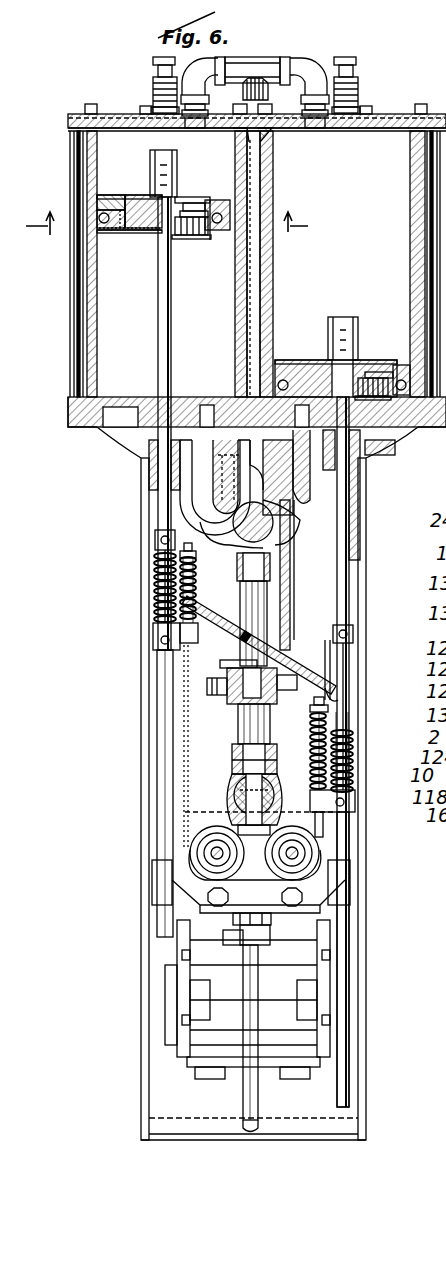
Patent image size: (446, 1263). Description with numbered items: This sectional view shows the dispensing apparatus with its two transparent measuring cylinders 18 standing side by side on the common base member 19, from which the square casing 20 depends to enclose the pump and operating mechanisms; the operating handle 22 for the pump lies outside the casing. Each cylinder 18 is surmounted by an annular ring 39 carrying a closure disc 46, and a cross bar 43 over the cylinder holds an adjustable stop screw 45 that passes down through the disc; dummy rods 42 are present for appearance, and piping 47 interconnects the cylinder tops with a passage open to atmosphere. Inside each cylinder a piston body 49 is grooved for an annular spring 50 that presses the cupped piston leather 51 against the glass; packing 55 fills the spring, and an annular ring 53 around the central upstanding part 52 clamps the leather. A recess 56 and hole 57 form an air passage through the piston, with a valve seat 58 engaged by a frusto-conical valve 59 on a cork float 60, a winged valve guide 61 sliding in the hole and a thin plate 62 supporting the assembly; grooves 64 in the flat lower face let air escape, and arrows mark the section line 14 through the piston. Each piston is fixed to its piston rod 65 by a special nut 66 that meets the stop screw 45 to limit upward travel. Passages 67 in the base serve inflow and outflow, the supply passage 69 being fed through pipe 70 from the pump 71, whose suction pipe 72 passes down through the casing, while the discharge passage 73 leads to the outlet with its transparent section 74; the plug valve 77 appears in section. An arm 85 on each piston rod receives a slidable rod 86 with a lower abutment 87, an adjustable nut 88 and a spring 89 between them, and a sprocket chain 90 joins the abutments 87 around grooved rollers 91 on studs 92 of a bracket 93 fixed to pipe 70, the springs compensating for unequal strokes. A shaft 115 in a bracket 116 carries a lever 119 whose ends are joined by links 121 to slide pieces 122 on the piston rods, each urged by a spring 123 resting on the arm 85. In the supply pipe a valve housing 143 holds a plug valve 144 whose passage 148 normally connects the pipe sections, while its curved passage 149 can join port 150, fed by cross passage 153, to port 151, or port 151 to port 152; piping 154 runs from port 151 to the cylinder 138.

The section line 14 is at (175, 227).
The measuring cylinder 18 is at (274, 188).
The base member 19 is at (80, 428).
The casing 20 is at (141, 740).
The operating handle 22 is at (330, 1013).
The annular ring 39 is at (76, 116).
The dummy rods 42 is at (77, 290).
The cross bar 43 is at (152, 93).
The stop screw 45 is at (156, 72).
The closure disc 46 is at (122, 116).
The piping 47 is at (300, 68).
The piston body 49 is at (131, 235).
The spring 50 is at (116, 235).
The piston leather 51 is at (99, 215).
The central upstanding cylindrical part 52 is at (132, 205).
The annular ring 53 is at (110, 195).
The packing 55 is at (97, 240).
The cylindrical recess 56 is at (218, 240).
The hole 57 is at (185, 198).
The valve seat 58 is at (208, 212).
The frusto-conical valve 59 is at (202, 236).
The cork float 60 is at (211, 240).
The valve guide 61 is at (198, 212).
The thin plate 62 is at (195, 205).
The grooves 64 is at (122, 240).
The piston rod 65 is at (172, 340).
The special nut 66 is at (163, 165).
The passage 67 is at (200, 478).
The supply passage 69 is at (246, 563).
The supply pipe 70 is at (245, 728).
The pump 71 is at (210, 1011).
The suction pipe 72 is at (240, 1110).
The discharge passage 73 is at (272, 520).
The transparent section 74 is at (430, 440).
The plug valve 77 is at (240, 517).
The arm 85 is at (153, 645).
The rod 86 is at (192, 597).
The abutment 87 is at (184, 663).
The abutment nut 88 is at (154, 572).
The spring 89 is at (192, 568).
The sprocket chain 90 is at (185, 692).
The grooved rollers 91 is at (210, 850).
The studs 92 is at (195, 862).
The bracket 93 is at (178, 907).
The shaft 115 is at (265, 650).
The bracket 116 is at (227, 690).
The lever 119 is at (340, 665).
The link 121 is at (158, 578).
The slide piece 122 is at (155, 542).
The spring 123 is at (178, 600).
The cylinder 138 is at (255, 265).
The valve housing 143 is at (240, 765).
The plug valve 144 is at (238, 790).
The passage 148 is at (232, 795).
The curved passage 149 is at (330, 754).
The port 150 is at (160, 812).
The port 151 is at (355, 810).
The port 152 is at (234, 754).
The cross passage 153 is at (238, 830).
The piping 154 is at (149, 450).